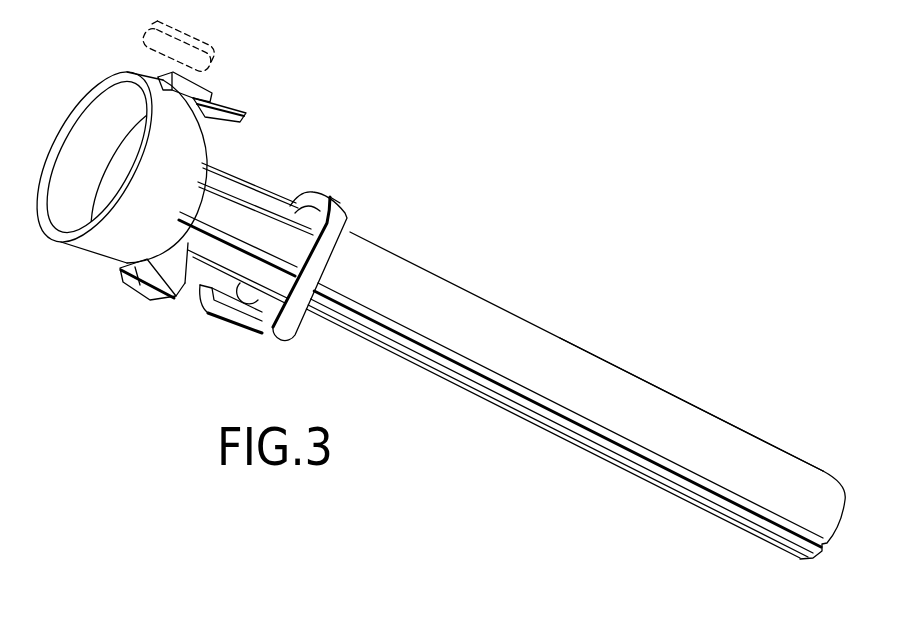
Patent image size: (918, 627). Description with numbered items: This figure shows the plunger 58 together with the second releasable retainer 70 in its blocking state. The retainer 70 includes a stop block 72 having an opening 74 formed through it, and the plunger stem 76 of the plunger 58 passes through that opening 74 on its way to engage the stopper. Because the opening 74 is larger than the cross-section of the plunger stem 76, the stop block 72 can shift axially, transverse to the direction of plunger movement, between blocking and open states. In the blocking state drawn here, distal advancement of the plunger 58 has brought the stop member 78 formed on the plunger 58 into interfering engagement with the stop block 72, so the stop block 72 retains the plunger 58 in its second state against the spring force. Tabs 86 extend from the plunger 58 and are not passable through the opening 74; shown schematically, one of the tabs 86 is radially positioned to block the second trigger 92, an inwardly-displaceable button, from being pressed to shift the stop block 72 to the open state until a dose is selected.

The plunger 58 is at (536, 319).
The second releasable retainer 70 is at (345, 218).
The stop block 72 is at (310, 266).
The opening 74 is at (270, 310).
The plunger stem 76 is at (666, 391).
The stop member 78 is at (304, 214).
The tabs 86 is at (207, 92).
The second trigger 92 is at (188, 32).